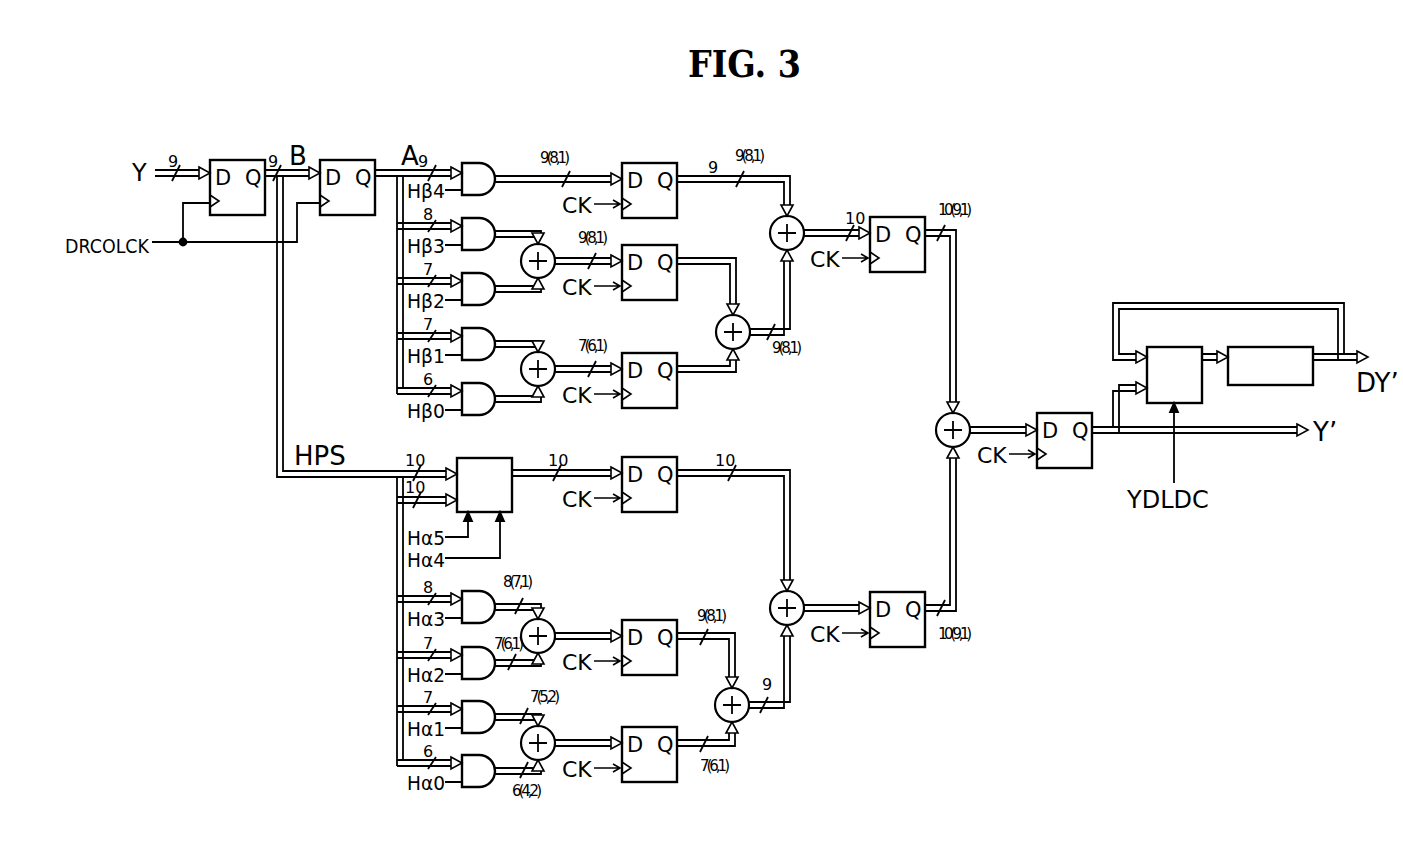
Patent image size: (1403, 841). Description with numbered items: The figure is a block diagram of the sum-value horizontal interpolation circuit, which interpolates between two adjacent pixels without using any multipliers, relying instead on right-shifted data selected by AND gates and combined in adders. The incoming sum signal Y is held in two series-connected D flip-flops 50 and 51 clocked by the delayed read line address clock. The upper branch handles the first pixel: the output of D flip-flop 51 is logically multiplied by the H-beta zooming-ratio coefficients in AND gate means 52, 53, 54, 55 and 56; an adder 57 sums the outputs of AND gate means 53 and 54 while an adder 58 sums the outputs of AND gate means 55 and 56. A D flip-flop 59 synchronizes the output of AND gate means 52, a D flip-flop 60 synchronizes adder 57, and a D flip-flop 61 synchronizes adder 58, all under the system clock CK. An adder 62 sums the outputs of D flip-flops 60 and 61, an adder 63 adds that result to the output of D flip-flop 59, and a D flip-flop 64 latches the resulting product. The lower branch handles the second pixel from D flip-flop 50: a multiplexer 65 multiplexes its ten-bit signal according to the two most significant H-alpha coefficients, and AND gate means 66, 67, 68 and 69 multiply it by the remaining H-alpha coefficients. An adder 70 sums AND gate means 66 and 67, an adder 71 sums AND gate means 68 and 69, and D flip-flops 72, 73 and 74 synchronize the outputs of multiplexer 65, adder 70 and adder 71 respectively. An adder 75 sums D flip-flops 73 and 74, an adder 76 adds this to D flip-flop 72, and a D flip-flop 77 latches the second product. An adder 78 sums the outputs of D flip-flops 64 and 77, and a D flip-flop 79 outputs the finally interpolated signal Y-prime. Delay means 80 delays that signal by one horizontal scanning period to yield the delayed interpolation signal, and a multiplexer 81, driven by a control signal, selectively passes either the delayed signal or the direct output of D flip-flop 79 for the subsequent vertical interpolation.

The D flip-flop 50 is at (237, 160).
The D flip-flop 51 is at (344, 160).
The AND gate means 52 is at (478, 165).
The AND gate means 53 is at (478, 220).
The AND gate means 54 is at (473, 275).
The AND gate means 55 is at (478, 330).
The AND gate means 56 is at (473, 385).
The adder 57 is at (540, 246).
The adder 58 is at (540, 354).
The D flip-flop 59 is at (660, 163).
The D flip-flop 60 is at (660, 245).
The D flip-flop 61 is at (660, 353).
The adder 62 is at (745, 346).
The adder 63 is at (797, 227).
The D flip-flop 64 is at (880, 217).
The multiplexer 65 is at (497, 458).
The AND gate means 66 is at (488, 587).
The AND gate means 67 is at (478, 650).
The AND gate means 68 is at (473, 705).
The AND gate means 69 is at (473, 760).
The adder 70 is at (548, 628).
The adder 71 is at (548, 735).
The D flip-flop 72 is at (660, 457).
The D flip-flop 73 is at (652, 620).
The D flip-flop 74 is at (645, 727).
The adder 75 is at (745, 720).
The adder 76 is at (799, 599).
The D flip-flop 77 is at (880, 592).
The adder 78 is at (964, 418).
The D flip-flop 79 is at (1050, 468).
The delay means 80 is at (1250, 347).
The multiplexer 81 is at (1170, 347).